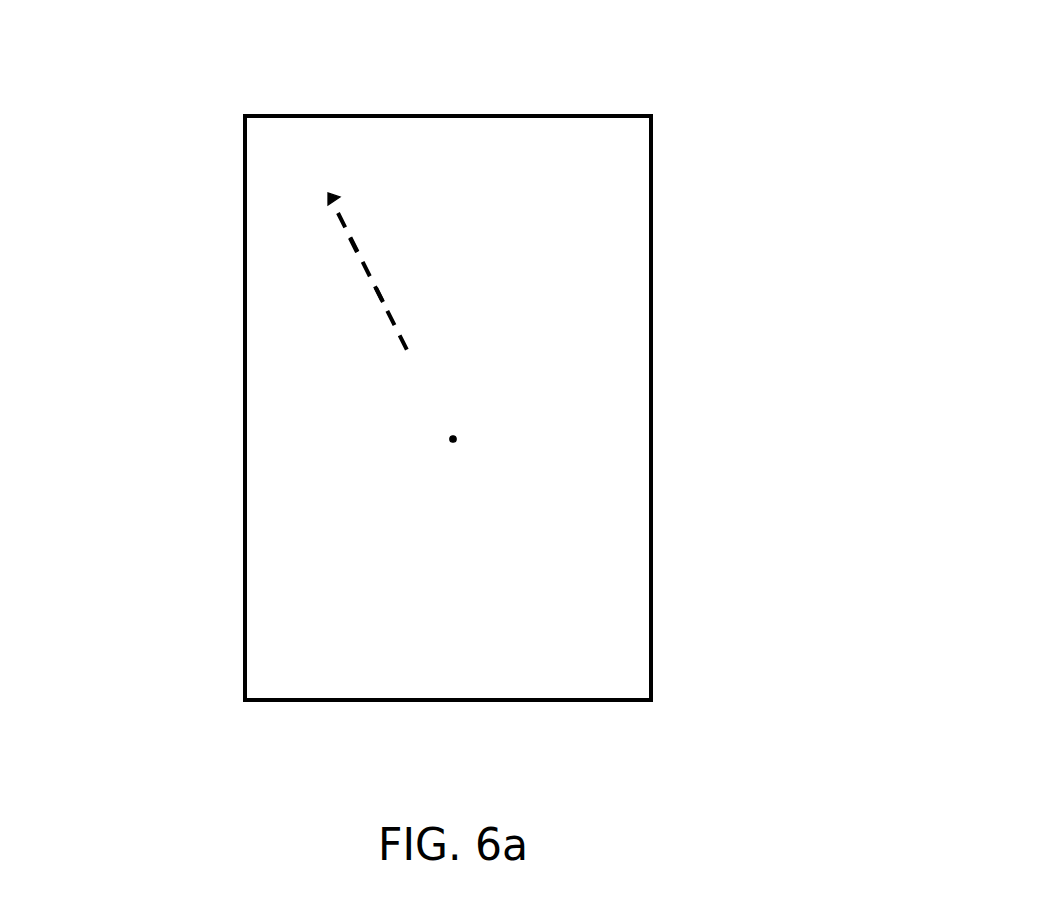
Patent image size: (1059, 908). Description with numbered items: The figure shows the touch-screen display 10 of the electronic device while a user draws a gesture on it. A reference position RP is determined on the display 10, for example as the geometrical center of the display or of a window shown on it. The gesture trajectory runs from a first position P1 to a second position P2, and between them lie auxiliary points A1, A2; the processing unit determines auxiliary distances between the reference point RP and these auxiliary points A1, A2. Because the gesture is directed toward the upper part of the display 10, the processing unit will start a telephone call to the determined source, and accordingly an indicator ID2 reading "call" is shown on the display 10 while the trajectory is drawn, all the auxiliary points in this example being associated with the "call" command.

The touch-screen display 10 is at (243, 610).
The indicator ID2 is at (575, 165).
The second position P2 is at (330, 197).
The first position P1 is at (410, 347).
The auxiliary point A2 is at (353, 242).
The auxiliary point A1 is at (380, 297).
The reference position RP is at (453, 439).